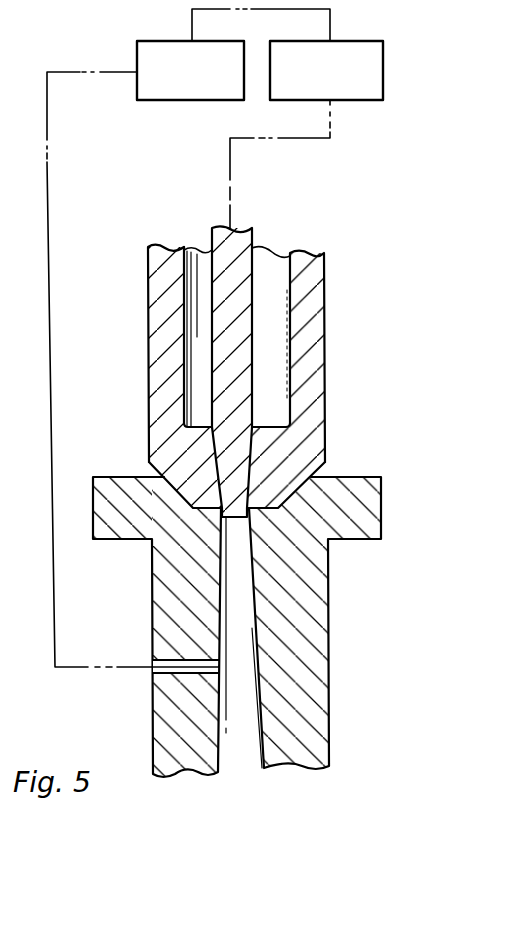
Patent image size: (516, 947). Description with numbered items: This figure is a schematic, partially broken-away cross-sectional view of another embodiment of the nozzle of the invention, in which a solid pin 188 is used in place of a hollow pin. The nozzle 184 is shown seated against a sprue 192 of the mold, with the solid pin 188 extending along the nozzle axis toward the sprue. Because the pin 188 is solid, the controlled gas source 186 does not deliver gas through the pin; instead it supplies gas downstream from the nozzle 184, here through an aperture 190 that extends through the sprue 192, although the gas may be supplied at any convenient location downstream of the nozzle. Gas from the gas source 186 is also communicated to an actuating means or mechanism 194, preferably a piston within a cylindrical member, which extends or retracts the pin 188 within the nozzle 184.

The nozzle 184 is at (318, 462).
The controlled gas source 186 is at (146, 39).
The solid pin 188 is at (253, 343).
The aperture 190 is at (173, 668).
The sprue 192 is at (367, 532).
The actuating means or mechanism 194 is at (354, 39).